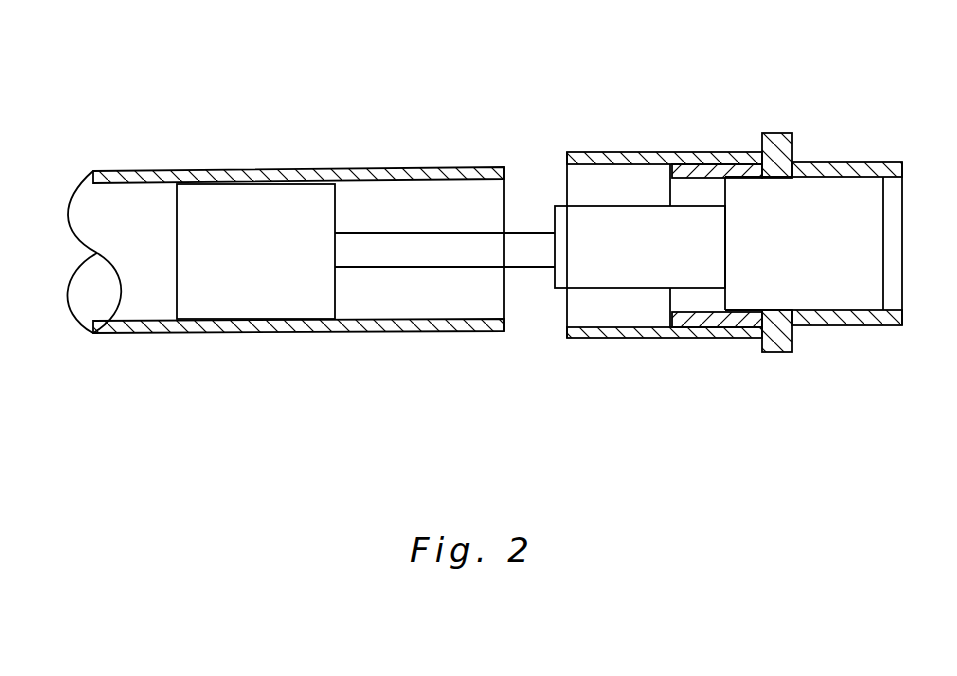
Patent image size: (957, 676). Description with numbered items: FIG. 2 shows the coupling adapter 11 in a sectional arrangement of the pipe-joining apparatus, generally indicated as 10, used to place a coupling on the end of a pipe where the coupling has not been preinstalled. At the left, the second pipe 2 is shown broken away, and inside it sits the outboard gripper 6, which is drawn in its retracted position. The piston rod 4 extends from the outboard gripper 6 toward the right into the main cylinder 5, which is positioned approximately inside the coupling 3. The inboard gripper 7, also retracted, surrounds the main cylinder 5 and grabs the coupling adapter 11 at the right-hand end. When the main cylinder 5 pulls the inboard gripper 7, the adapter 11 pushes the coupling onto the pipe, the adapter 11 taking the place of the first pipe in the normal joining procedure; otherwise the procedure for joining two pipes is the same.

The second pipe 2 is at (410, 170).
The coupling 3 is at (635, 152).
The piston rod 4 is at (450, 250).
The main cylinder 5 is at (625, 253).
The outboard gripper 6 is at (225, 268).
The inboard gripper 7 is at (840, 267).
The invention 10 is at (690, 338).
The coupling adapter 11 is at (857, 323).